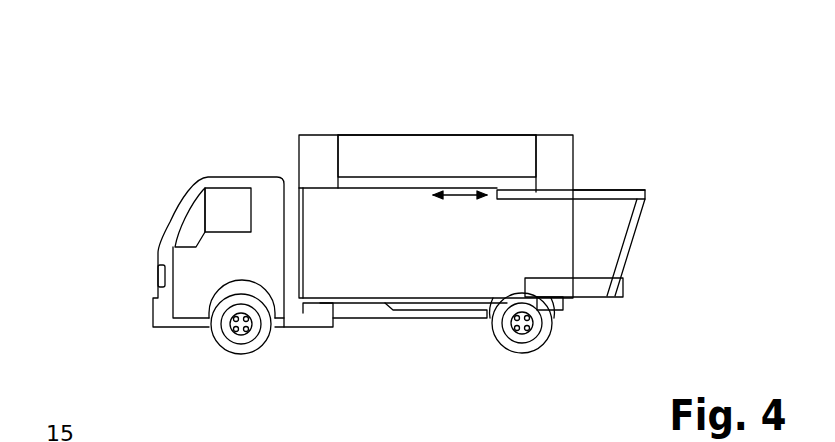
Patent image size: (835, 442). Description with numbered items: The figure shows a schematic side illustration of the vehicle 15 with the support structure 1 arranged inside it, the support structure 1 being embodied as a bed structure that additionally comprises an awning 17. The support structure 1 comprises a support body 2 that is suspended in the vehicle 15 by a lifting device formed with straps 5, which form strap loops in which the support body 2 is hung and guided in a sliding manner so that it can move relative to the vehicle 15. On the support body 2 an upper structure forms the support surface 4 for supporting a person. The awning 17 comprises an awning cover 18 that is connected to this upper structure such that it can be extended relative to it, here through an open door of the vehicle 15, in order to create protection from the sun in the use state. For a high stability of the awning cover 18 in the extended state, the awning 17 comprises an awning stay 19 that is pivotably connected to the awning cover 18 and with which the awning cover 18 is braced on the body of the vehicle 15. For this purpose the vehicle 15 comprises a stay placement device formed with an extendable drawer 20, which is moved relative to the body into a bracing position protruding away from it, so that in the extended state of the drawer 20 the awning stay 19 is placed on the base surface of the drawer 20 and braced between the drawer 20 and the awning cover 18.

The vehicle 15 is at (98, 104).
The support structure 1 is at (360, 122).
The support surface 4 is at (405, 168).
The straps 5 is at (338, 148).
The support body 2 is at (328, 188).
The awning 17 is at (540, 210).
The awning cover 18 is at (588, 192).
The awning stay 19 is at (628, 242).
The drawer 20 is at (638, 288).